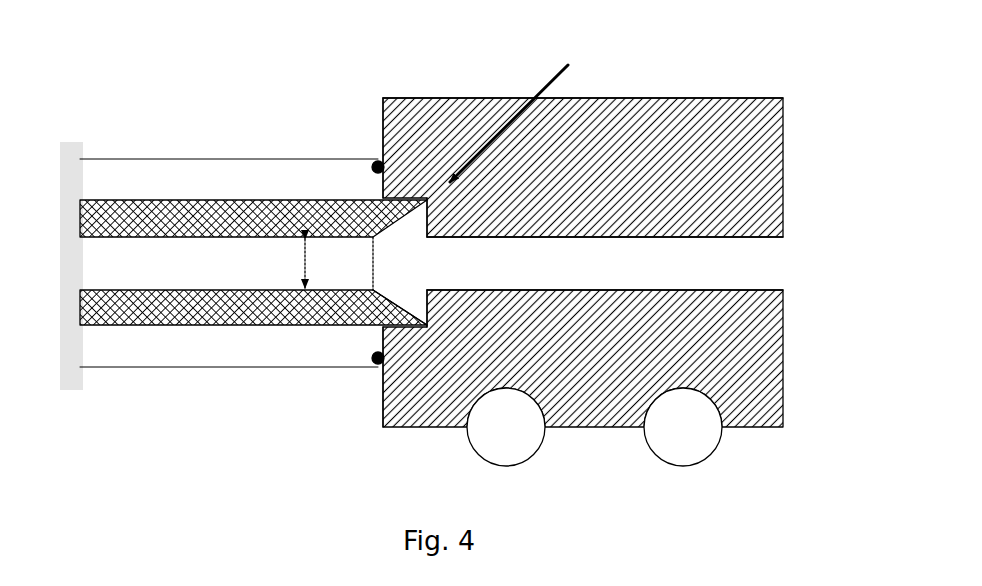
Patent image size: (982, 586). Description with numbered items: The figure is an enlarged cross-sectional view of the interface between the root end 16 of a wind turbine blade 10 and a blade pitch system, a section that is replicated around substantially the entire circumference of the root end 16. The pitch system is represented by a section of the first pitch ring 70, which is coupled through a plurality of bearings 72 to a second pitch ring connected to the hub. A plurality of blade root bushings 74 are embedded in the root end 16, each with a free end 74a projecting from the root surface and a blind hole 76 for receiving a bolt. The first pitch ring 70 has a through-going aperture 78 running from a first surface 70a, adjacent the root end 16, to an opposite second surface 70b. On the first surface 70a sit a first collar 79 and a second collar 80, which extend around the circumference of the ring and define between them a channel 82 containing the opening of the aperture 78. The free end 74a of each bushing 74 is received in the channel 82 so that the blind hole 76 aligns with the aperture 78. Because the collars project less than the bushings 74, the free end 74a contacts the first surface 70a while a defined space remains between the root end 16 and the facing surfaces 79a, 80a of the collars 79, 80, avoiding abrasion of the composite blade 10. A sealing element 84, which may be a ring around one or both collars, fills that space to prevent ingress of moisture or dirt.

The wind turbine blade 10 is at (120, 353).
The root end 16 is at (268, 124).
The first pitch ring 70 is at (577, 268).
The first surface 70a is at (427, 240).
The second surface 70b is at (783, 112).
The bearings 72 is at (672, 439).
The blade root bushings 74 is at (222, 327).
The free end 74a is at (353, 342).
The blind hole 76 is at (228, 278).
The through-going aperture 78 is at (606, 276).
The first collar 79 is at (417, 98).
The facing surface 79a is at (378, 108).
The second collar 80 is at (403, 422).
The facing surface 80a is at (383, 410).
The channel 82 is at (527, 108).
The sealing element 84 is at (372, 362).